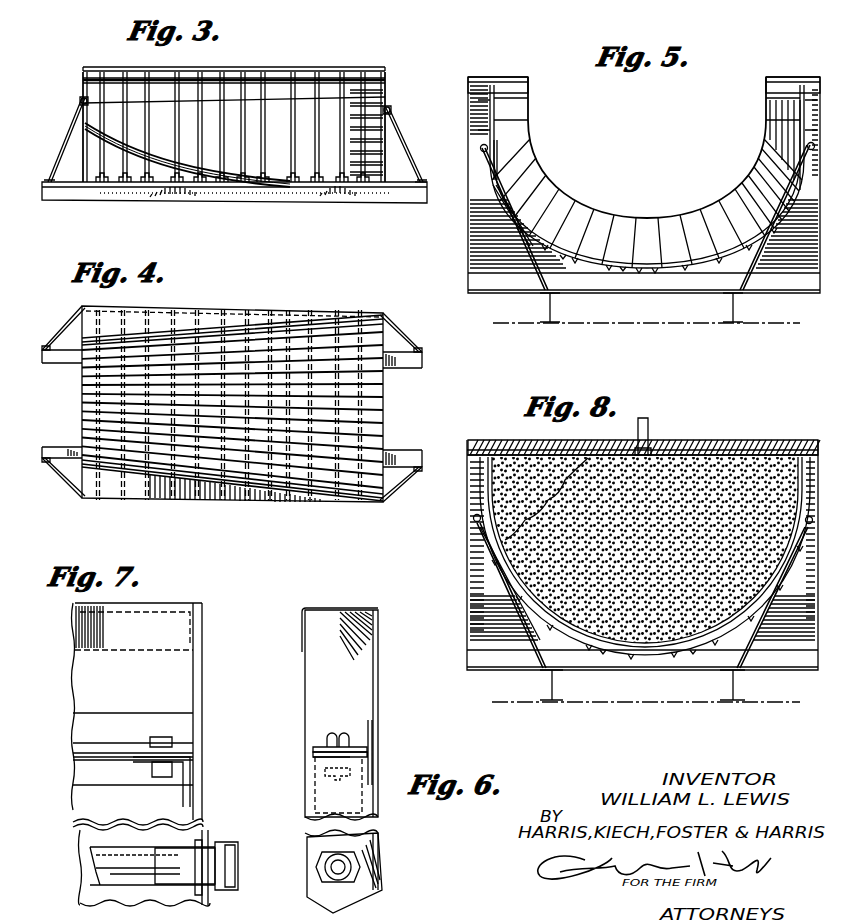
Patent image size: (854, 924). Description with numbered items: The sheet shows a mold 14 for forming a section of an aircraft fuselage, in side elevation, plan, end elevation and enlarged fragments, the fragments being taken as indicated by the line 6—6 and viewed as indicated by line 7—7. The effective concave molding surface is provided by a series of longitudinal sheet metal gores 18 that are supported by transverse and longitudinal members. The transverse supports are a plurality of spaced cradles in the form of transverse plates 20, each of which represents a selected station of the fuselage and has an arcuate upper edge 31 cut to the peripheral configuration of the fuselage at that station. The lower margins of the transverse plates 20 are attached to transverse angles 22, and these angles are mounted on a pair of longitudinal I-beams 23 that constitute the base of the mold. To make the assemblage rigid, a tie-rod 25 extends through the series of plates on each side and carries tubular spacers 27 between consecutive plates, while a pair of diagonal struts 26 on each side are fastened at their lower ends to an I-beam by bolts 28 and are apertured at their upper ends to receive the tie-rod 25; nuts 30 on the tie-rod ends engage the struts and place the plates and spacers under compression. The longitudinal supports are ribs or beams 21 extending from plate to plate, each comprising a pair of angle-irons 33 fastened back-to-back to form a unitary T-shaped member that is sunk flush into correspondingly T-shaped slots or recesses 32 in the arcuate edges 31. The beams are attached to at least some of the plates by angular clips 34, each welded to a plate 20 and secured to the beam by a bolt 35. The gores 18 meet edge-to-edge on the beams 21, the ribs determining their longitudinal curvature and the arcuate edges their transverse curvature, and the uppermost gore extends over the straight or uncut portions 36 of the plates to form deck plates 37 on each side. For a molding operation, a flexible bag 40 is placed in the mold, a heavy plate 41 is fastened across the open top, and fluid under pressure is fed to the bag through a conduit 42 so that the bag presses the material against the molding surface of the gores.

In FIG. 3, the section line 6— 6 is at (410, 118).
In FIG. 6, the section line 7— 7 is at (290, 742).
In FIG. 3, the mold 14 is at (289, 66).
In FIG. 4, the mold 14 is at (278, 342).
In FIG. 5, the mold 14 is at (543, 131).
In FIG. 8, the mold 14 is at (468, 558).
In FIG. 4, the longitudinal sheet metal gores 18 is at (375, 420).
In FIG. 5, the longitudinal sheet metal gores 18 is at (665, 220).
In FIG. 8, the longitudinal sheet metal gores 18 is at (575, 620).
In FIG. 7, the longitudinal sheet metal gores 18 is at (62, 831).
In FIG. 6, the longitudinal sheet metal gores 18 is at (380, 650).
In FIG. 3, the transverse plates 20 is at (318, 93).
In FIG. 4, the transverse plates 20 is at (157, 495).
In FIG. 5, the transverse plates 20 is at (470, 216).
In FIG. 8, the transverse plates 20 is at (472, 587).
In FIG. 7, the transverse plates 20 is at (203, 663).
In FIG. 6, the transverse plates 20 is at (315, 667).
In FIG. 3, the longitudinal ribs or beams 21 is at (193, 190).
In FIG. 5, the longitudinal ribs or beams 21 is at (744, 161).
In FIG. 8, the longitudinal ribs or beams 21 is at (584, 640).
In FIG. 7, the longitudinal ribs or beams 21 is at (64, 742).
In FIG. 6, the longitudinal ribs or beams 21 is at (320, 748).
In FIG. 3, the transverse angles 22 is at (93, 186).
In FIG. 5, the transverse angles 22 is at (488, 288).
In FIG. 8, the transverse angles 22 is at (660, 665).
In FIG. 3, the longitudinal I-beams 23 is at (232, 200).
In FIG. 4, the longitudinal I-beams 23 is at (55, 447).
In FIG. 5, the longitudinal I-beams 23 is at (555, 322).
In FIG. 8, the longitudinal I-beams 23 is at (562, 686).
In FIG. 3, the tie-rod 25 is at (80, 100).
In FIG. 5, the tie-rod 25 is at (480, 147).
In FIG. 8, the tie-rod 25 is at (472, 518).
In FIG. 7, the tie-rod 25 is at (200, 850).
In FIG. 6, the tie-rod 25 is at (345, 867).
In FIG. 3, the diagonal struts 26 is at (68, 146).
In FIG. 4, the diagonal struts 26 is at (398, 336).
In FIG. 5, the diagonal struts 26 is at (500, 238).
In FIG. 8, the diagonal struts 26 is at (525, 625).
In FIG. 7, the diagonal struts 26 is at (210, 902).
In FIG. 6, the diagonal struts 26 is at (366, 903).
In FIG. 3, the tubular spacers 27 is at (118, 100).
In FIG. 7, the tubular spacers 27 is at (100, 864).
In FIG. 3, the bolts 28 is at (422, 182).
In FIG. 4, the bolts 28 is at (423, 360).
In FIG. 5, the bolts 28 is at (546, 298).
In FIG. 8, the bolts 28 is at (738, 676).
In FIG. 3, the nuts 30 is at (82, 96).
In FIG. 7, the nuts 30 is at (235, 848).
In FIG. 6, the nuts 30 is at (322, 868).
In FIG. 5, the arcuate upper edge 31 is at (530, 250).
In FIG. 8, the arcuate upper edge 31 is at (628, 655).
In FIG. 5, the slots or recesses 32 is at (605, 270).
In FIG. 8, the slots or recesses 32 is at (700, 640).
In FIG. 6, the slots or recesses 32 is at (320, 757).
In FIG. 7, the angle-irons 33 is at (97, 713).
In FIG. 6, the angle-irons 33 is at (370, 755).
In FIG. 7, the angular clips 34 is at (192, 770).
In FIG. 6, the angular clips 34 is at (315, 790).
In FIG. 7, the bolt 35 is at (162, 737).
In FIG. 6, the bolt 35 is at (336, 735).
In FIG. 6, the straight or uncut portions 36 is at (358, 608).
In FIG. 3, the deck plates 37 is at (212, 68).
In FIG. 4, the deck plates 37 is at (164, 312).
In FIG. 5, the deck plates 37 is at (478, 72).
In FIG. 7, the deck plates 37 is at (168, 603).
In FIG. 6, the deck plates 37 is at (326, 608).
In FIG. 8, the flexible bag 40 is at (735, 475).
In FIG. 8, the heavy plate 41 is at (498, 440).
In FIG. 8, the conduit 42 is at (650, 425).